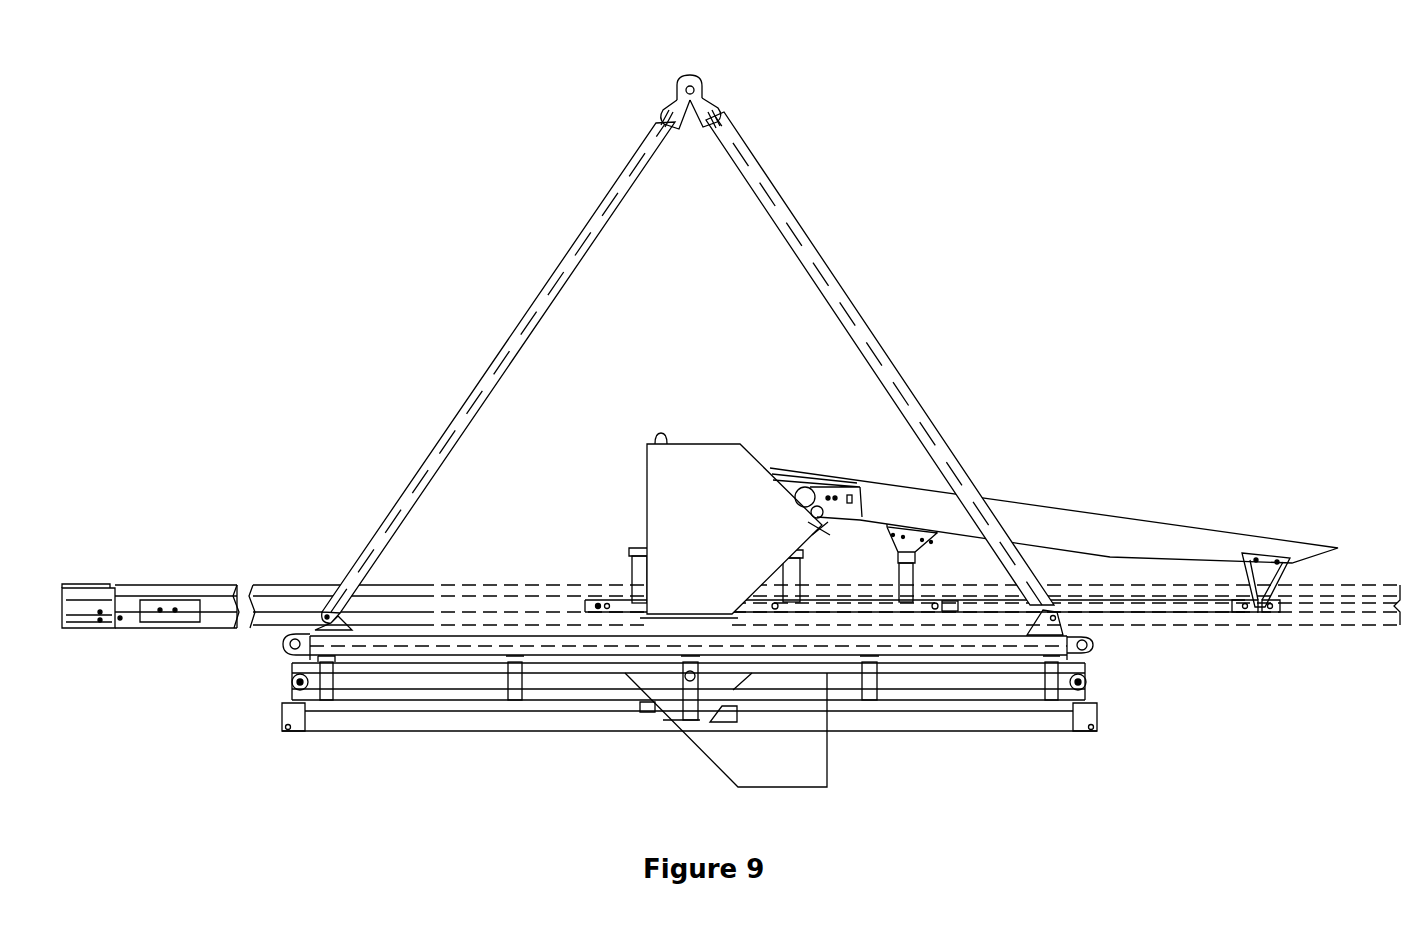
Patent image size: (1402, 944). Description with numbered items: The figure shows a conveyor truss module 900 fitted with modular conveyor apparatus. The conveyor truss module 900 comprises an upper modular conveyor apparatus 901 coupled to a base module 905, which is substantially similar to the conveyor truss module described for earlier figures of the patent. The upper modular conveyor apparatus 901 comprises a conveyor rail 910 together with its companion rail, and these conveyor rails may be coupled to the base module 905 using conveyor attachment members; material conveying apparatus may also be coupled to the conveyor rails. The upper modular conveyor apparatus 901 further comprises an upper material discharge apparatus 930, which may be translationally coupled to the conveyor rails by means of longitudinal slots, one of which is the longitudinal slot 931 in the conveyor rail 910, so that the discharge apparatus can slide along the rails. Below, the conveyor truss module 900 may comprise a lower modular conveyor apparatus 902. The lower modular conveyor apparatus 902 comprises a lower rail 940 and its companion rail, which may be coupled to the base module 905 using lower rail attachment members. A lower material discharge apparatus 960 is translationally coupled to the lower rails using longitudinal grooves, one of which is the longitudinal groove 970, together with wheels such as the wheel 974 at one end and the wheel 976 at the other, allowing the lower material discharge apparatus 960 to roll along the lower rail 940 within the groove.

The conveyor truss module 900 is at (555, 130).
The upper modular conveyor apparatus 901 is at (810, 440).
The lower modular conveyor apparatus 902 is at (527, 750).
The base module 905 is at (445, 408).
The conveyor rail 910 is at (315, 583).
The upper material discharge apparatus 930 is at (640, 515).
The longitudinal slot 931 is at (1318, 607).
The lower rail 940 is at (290, 668).
The lower material discharge apparatus 960 is at (692, 747).
The longitudinal groove 970 is at (372, 682).
The wheel 974 is at (1088, 682).
The wheel 976 is at (292, 687).